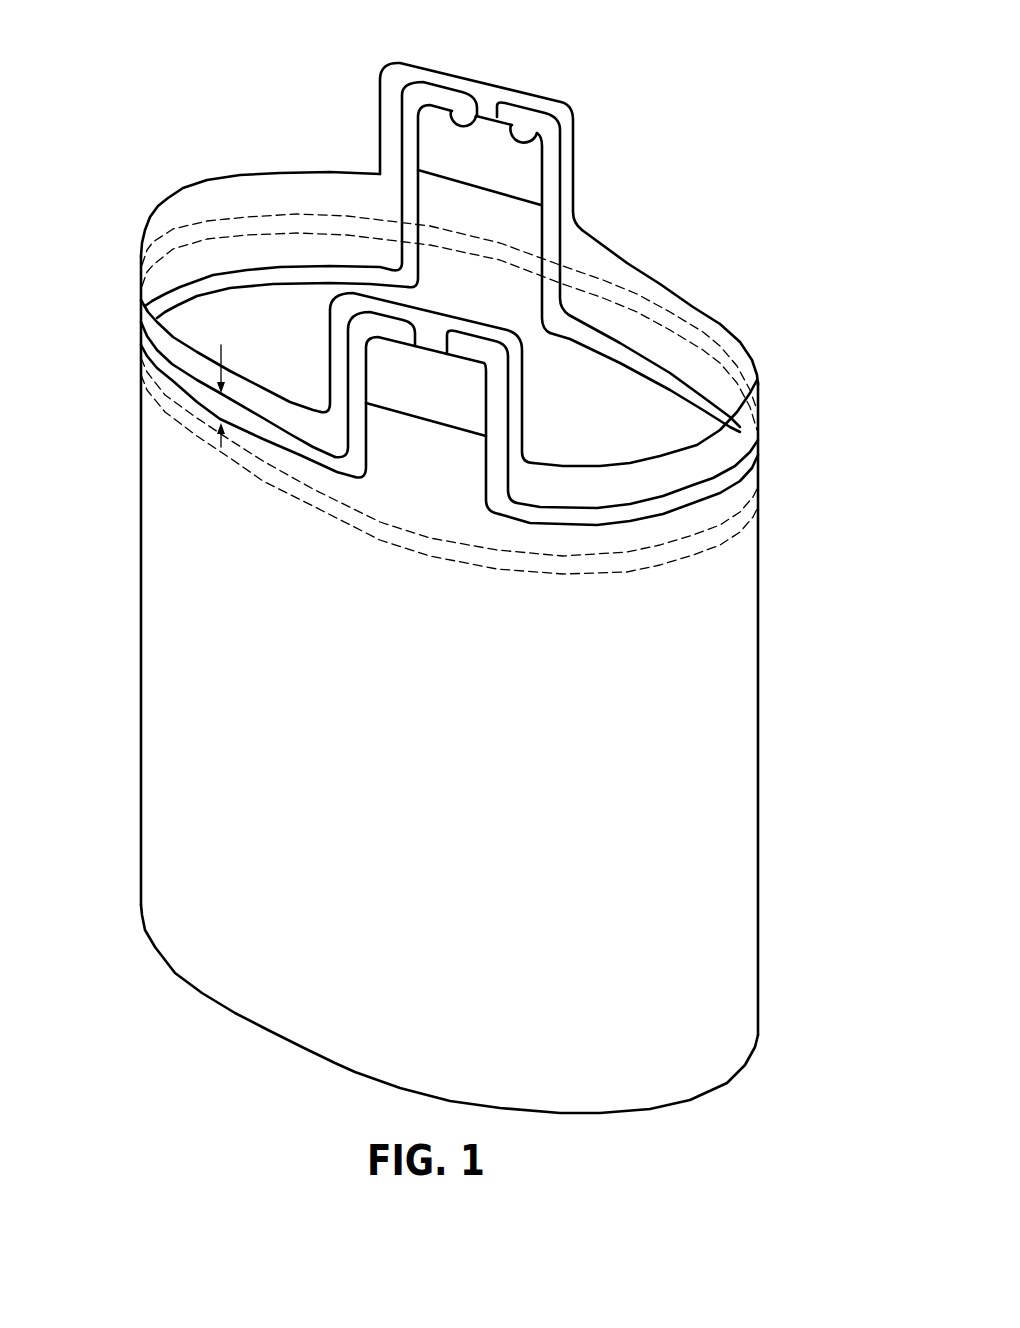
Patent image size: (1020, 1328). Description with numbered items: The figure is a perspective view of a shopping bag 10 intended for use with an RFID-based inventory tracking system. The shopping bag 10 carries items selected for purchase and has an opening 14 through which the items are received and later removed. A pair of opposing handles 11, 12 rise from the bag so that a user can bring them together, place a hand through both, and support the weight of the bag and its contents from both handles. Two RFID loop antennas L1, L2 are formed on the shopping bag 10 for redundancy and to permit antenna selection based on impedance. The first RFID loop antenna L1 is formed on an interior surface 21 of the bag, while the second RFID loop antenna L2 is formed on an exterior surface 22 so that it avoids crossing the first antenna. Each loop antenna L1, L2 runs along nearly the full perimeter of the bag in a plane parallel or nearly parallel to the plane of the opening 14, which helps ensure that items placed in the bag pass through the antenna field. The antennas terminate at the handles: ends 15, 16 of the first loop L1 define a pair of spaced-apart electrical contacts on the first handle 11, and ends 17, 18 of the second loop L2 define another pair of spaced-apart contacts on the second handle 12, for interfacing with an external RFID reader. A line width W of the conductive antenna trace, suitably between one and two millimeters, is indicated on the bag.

The shopping bag 10 is at (708, 237).
The first handle 11 is at (517, 90).
The second handle 12 is at (472, 323).
The opening 14 is at (258, 313).
The end of first loop antenna 15 is at (470, 100).
The end of first loop antenna 16 is at (545, 128).
The end of second loop antenna 17 is at (403, 334).
The end of second loop antenna 18 is at (466, 355).
The interior surface 21 is at (518, 177).
The exterior surface 22 is at (427, 417).
The first RFID loop antenna L1 is at (562, 193).
The second RFID loop antenna L2 is at (509, 422).
The line width W is at (224, 381).